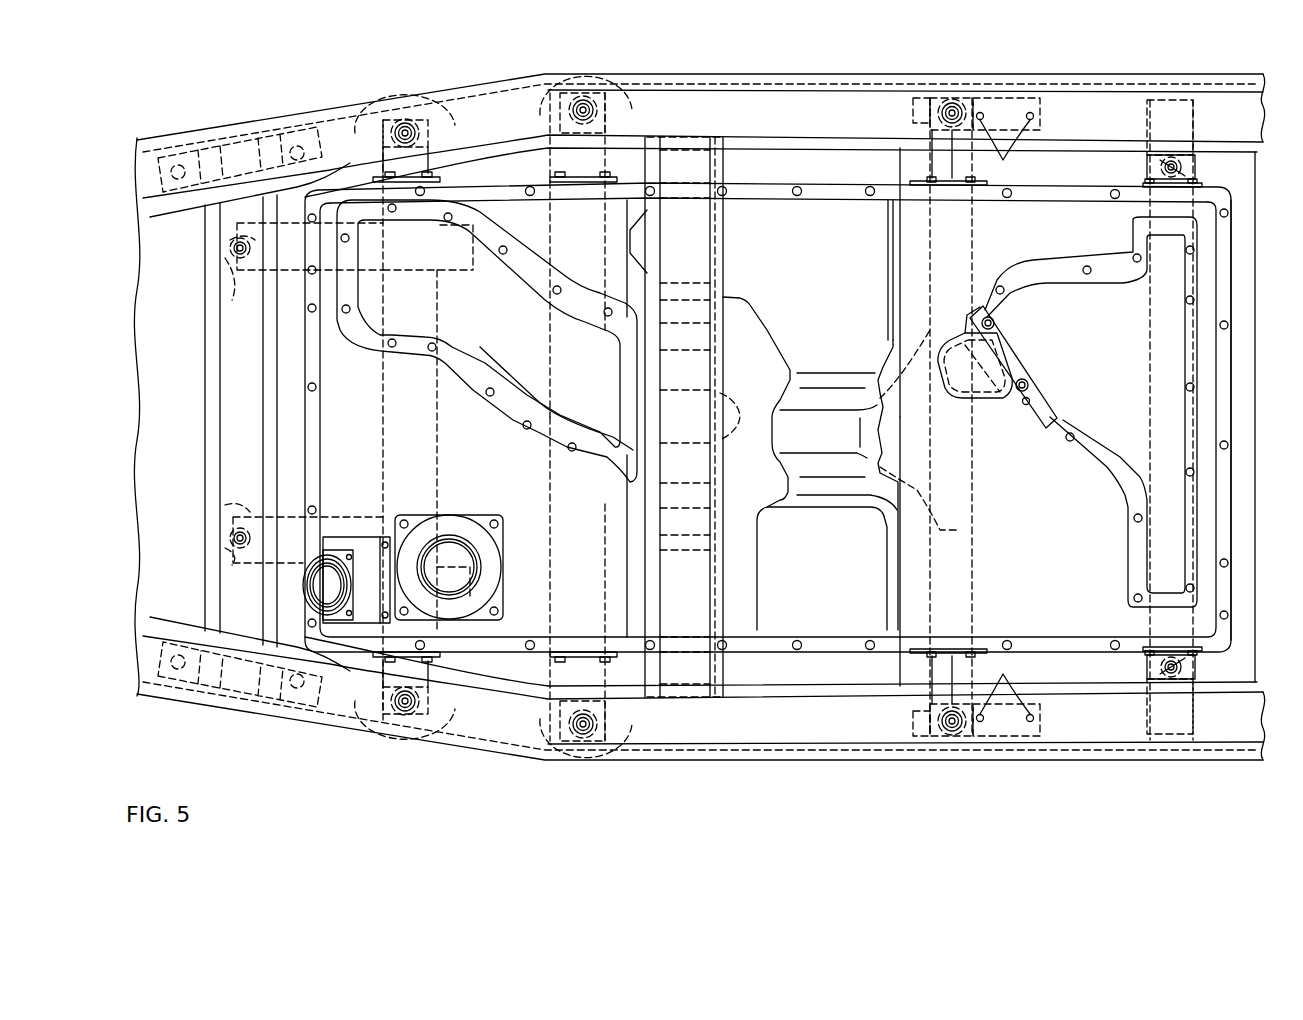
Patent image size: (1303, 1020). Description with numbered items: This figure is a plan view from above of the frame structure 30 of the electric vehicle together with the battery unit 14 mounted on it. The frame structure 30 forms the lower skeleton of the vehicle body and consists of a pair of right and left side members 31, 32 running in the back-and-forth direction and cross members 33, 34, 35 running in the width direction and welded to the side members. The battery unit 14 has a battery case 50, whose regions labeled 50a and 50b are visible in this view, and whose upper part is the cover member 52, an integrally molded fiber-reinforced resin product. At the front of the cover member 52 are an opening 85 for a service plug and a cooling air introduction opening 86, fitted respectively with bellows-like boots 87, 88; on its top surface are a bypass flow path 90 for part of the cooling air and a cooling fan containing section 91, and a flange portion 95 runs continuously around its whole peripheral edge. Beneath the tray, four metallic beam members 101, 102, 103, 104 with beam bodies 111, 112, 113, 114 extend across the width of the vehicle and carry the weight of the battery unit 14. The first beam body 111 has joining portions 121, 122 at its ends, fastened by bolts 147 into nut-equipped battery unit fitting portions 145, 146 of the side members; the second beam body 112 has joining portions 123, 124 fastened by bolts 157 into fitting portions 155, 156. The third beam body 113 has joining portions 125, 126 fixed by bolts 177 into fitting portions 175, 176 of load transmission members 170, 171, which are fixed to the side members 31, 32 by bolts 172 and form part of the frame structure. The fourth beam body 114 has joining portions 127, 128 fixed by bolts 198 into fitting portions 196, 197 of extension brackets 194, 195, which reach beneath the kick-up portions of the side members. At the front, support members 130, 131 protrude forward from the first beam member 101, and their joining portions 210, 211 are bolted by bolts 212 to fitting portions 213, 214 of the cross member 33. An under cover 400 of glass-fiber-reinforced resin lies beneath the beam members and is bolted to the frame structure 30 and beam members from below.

The battery unit 14 is at (812, 182).
The frame structure 30 is at (734, 72).
The side member 31 is at (1070, 745).
The side member 32 is at (1073, 105).
The cross member 33 is at (222, 381).
The cross member 34 is at (745, 355).
The cross member 35 is at (960, 440).
The battery case 50 is at (838, 250).
The left floor panel portion 50a is at (305, 420).
The right floor panel portion 50b is at (1233, 420).
The cover member 52 is at (755, 207).
The opening for service plug 85 is at (455, 545).
The cooling air introduction opening 86 is at (318, 588).
The bellows-like boot 87 is at (490, 560).
The bellows-like boot 88 is at (338, 625).
The bypass flow path 90 is at (508, 255).
The cooling fan containing section 91 is at (1063, 288).
The flange portion 95 is at (822, 646).
The beam member 101 is at (425, 432).
The beam member 102 is at (640, 417).
The beam member 103 is at (985, 480).
The beam member 104 is at (1155, 407).
The beam body 111 is at (383, 367).
The beam body 112 is at (548, 462).
The beam body 113 is at (960, 527).
The beam body 114 is at (1128, 470).
The joining portion 121 is at (332, 715).
The joining portion 122 is at (357, 120).
The joining portion 123 is at (570, 750).
The joining portion 124 is at (552, 95).
The joining portion 125 is at (920, 755).
The joining portion 126 is at (915, 103).
The joining portion 127 is at (1147, 670).
The joining portion 128 is at (1147, 166).
The front support member 130 is at (290, 510).
The front support member 131 is at (295, 298).
The battery unit fitting portion 145 is at (442, 722).
The battery unit fitting portion 146 is at (448, 103).
The bolt 147 is at (406, 128).
The battery unit fitting portion 155 is at (615, 740).
The battery unit fitting portion 156 is at (625, 95).
The bolt 157 is at (586, 106).
The load transmission member 170 is at (995, 745).
The load transmission member 171 is at (1000, 97).
The bolt 172 is at (1006, 417).
The battery unit fitting portion 175 is at (913, 723).
The battery unit fitting portion 176 is at (913, 110).
The bolt 177 is at (952, 108).
The extension bracket 194 is at (1195, 668).
The extension bracket 195 is at (1195, 168).
The battery unit fitting portion 196 is at (1193, 700).
The battery unit fitting portion 197 is at (1193, 135).
The bolt 198 is at (1163, 160).
The joining portion 210 is at (222, 515).
The joining portion 211 is at (237, 300).
The bolt 212 is at (237, 252).
The battery unit fitting portion 213 is at (230, 555).
The battery unit fitting portion 214 is at (235, 243).
The under cover 400 is at (748, 757).